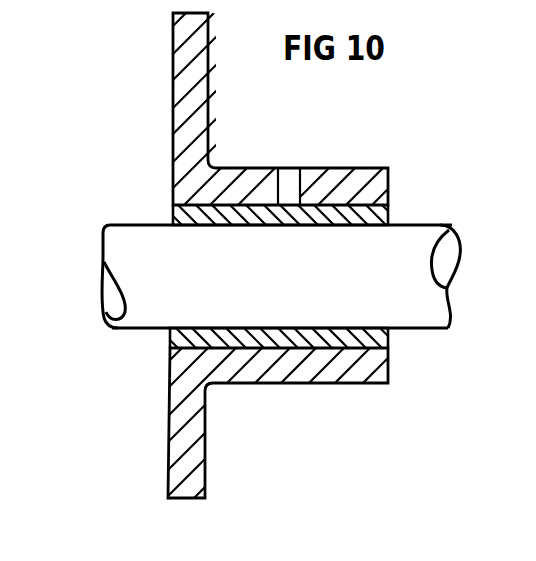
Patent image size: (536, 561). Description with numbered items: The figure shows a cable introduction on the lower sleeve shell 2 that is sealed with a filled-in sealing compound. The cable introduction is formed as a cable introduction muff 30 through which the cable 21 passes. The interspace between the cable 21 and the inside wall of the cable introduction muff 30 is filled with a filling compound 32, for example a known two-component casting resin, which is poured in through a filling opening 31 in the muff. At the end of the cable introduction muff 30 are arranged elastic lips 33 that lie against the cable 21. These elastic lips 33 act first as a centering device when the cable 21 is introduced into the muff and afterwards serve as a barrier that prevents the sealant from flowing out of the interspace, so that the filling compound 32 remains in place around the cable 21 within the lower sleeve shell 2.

The lower sleeve shell 2 is at (197, 78).
The cable 21 is at (155, 308).
The cable introduction muff 30 is at (237, 185).
The filling opening 31 is at (297, 188).
The filling compound 32 is at (342, 170).
The elastic lips 33 is at (393, 220).